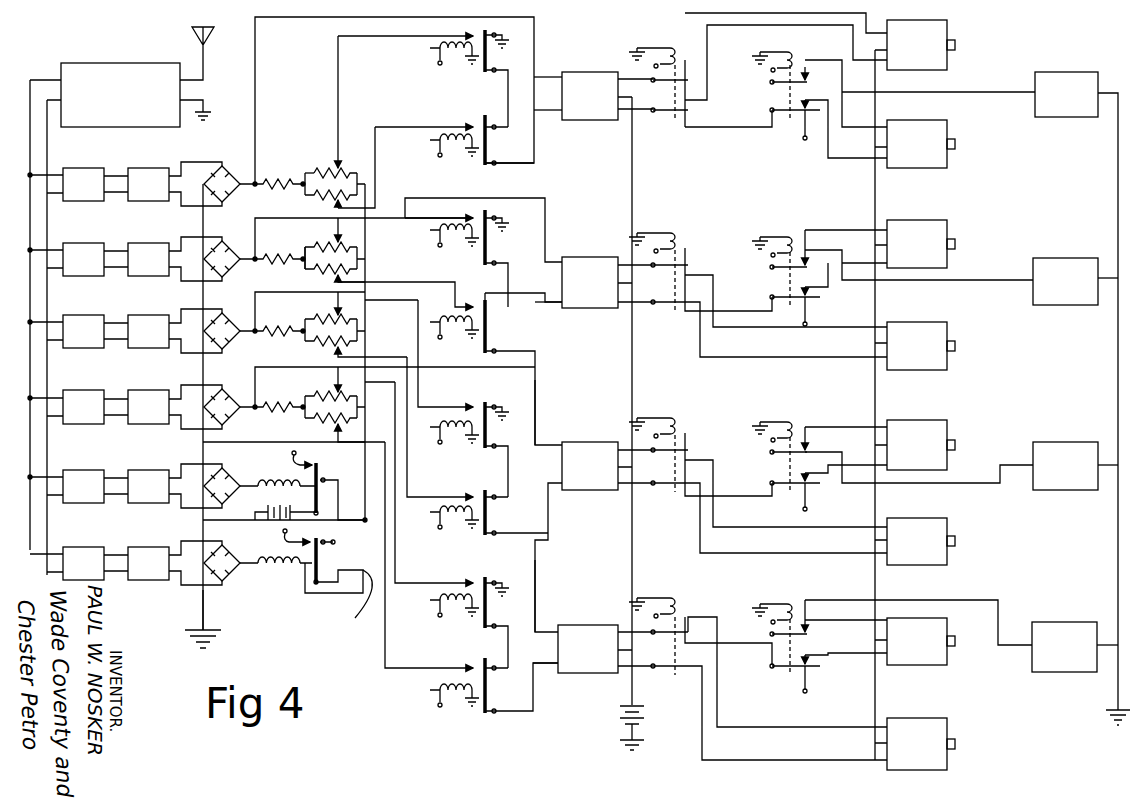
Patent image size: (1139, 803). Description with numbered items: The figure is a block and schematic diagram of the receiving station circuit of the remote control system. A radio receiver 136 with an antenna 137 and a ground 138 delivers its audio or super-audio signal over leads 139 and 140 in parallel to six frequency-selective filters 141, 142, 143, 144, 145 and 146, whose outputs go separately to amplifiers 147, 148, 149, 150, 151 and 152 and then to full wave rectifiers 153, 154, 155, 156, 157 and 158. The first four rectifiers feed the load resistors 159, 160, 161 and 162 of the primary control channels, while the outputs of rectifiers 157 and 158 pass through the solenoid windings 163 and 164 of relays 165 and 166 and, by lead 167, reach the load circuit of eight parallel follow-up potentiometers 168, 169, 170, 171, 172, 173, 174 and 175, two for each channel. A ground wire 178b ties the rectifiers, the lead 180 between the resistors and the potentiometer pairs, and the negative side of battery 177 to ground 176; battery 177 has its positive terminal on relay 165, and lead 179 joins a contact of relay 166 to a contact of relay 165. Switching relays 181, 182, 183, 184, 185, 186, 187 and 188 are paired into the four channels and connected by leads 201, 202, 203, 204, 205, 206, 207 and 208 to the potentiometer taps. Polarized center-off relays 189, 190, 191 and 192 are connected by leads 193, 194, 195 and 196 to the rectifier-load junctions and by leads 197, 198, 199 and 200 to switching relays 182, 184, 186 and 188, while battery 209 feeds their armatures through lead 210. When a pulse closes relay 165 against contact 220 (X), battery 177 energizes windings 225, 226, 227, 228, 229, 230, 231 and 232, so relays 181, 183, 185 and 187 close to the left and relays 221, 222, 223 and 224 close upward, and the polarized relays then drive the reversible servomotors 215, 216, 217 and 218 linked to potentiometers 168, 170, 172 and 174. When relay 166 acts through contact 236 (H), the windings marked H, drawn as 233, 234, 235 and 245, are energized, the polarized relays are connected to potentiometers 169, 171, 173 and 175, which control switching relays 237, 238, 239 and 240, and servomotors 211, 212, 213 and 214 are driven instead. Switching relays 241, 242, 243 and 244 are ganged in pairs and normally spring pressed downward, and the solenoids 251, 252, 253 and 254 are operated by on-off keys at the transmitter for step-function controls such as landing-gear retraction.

The radio receiver 136 is at (122, 66).
The antenna 137 is at (205, 62).
The ground 138 is at (206, 104).
The lead 139 is at (30, 80).
The lead 140 is at (48, 141).
The frequency-selective filter 141 is at (84, 175).
The frequency-selective filter 142 is at (83, 250).
The frequency-selective filter 143 is at (83, 323).
The frequency-selective filter 144 is at (83, 398).
The frequency-selective filter 145 is at (83, 478).
The frequency-selective filter 146 is at (83, 554).
The amplifier 147 is at (148, 175).
The amplifier 148 is at (148, 250).
The amplifier 149 is at (148, 323).
The amplifier 150 is at (148, 398).
The amplifier 151 is at (148, 478).
The amplifier 152 is at (148, 554).
The full wave rectifier 153 is at (226, 170).
The full wave rectifier 154 is at (226, 245).
The full wave rectifier 155 is at (228, 318).
The full wave rectifier 156 is at (235, 418).
The full wave rectifier 157 is at (232, 474).
The full wave rectifier 158 is at (230, 578).
The resistor 159 is at (279, 173).
The resistor 160 is at (279, 248).
The resistor 161 is at (279, 320).
The resistor 162 is at (279, 396).
The solenoid winding 163 is at (264, 494).
The solenoid winding 164 is at (300, 569).
The relay 165 is at (320, 474).
The relay 166 is at (305, 590).
The lead 167 is at (362, 193).
The variable follow-up potentiometer 168 is at (331, 171).
The variable follow-up potentiometer 169 is at (335, 194).
The variable follow-up potentiometer 170 is at (331, 246).
The variable follow-up potentiometer 171 is at (335, 266).
The variable follow-up potentiometer 172 is at (331, 319).
The variable follow-up potentiometer 173 is at (335, 339).
The variable follow-up potentiometer 174 is at (331, 397).
The variable follow-up potentiometer 175 is at (335, 416).
The ground 176 is at (196, 626).
The battery 177 is at (293, 518).
The ground wire 178b is at (206, 608).
The lead 179 is at (352, 608).
The lead 180 is at (303, 268).
The switching relay 181 is at (488, 57).
The switching relay 182 is at (488, 142).
The switching relay 183 is at (488, 248).
The switching relay 184 is at (488, 335).
The switching relay 185 is at (488, 435).
The switching relay 186 is at (488, 519).
The switching relay 187 is at (488, 611).
The switching relay 188 is at (488, 689).
The polarized center-off relay 189 is at (594, 72).
The polarized center-off relay 190 is at (590, 257).
The polarized center-off relay 191 is at (587, 442).
The polarized center-off relay 192 is at (587, 625).
The lead 193 is at (536, 26).
The lead 194 is at (546, 216).
The lead 195 is at (536, 387).
The lead 196 is at (536, 571).
The lead 197 is at (536, 132).
The lead 198 is at (546, 329).
The lead 199 is at (549, 529).
The lead 200 is at (536, 692).
The lead 201 is at (366, 42).
The lead 202 is at (390, 124).
The lead 203 is at (378, 240).
The lead 204 is at (434, 284).
The lead 205 is at (419, 377).
The lead 206 is at (408, 466).
The lead 207 is at (396, 581).
The lead 208 is at (386, 657).
The battery 209 is at (646, 721).
The lead 210 is at (633, 544).
The reversible servomotor 211 is at (947, 24).
The reversible servomotor 212 is at (945, 326).
The reversible servomotor 213 is at (945, 526).
The reversible servomotor 214 is at (945, 724).
The reversible servomotor 215 is at (945, 130).
The reversible servomotor 216 is at (943, 228).
The reversible servomotor 217 is at (945, 424).
The reversible servomotor 218 is at (945, 624).
The contact 220 is at (306, 458).
The switching relay 221 is at (823, 80).
The switching relay 222 is at (812, 265).
The switching relay 223 is at (810, 452).
The switching relay 224 is at (805, 619).
The relay winding 225 is at (453, 45).
The relay winding 226 is at (453, 228).
The relay winding 227 is at (453, 422).
The relay winding 228 is at (451, 596).
The relay winding 229 is at (790, 56).
The relay winding 230 is at (790, 239).
The relay winding 231 is at (790, 424).
The relay winding 232 is at (788, 606).
The relay coil 233 is at (450, 135).
The relay coil 234 is at (453, 318).
The relay coil 235 is at (453, 508).
The contact 236 is at (277, 540).
The switching relay 237 is at (672, 96).
The switching relay 238 is at (668, 306).
The switching relay 239 is at (670, 490).
The switching relay 240 is at (670, 673).
The switching relay 241 is at (672, 46).
The switching relay 242 is at (672, 232).
The switching relay 243 is at (672, 418).
The switching relay 244 is at (651, 600).
The relay coil 245 is at (453, 686).
The solenoid 251 is at (1065, 72).
The solenoid 252 is at (1065, 258).
The solenoid 253 is at (1065, 442).
The solenoid 254 is at (1065, 622).